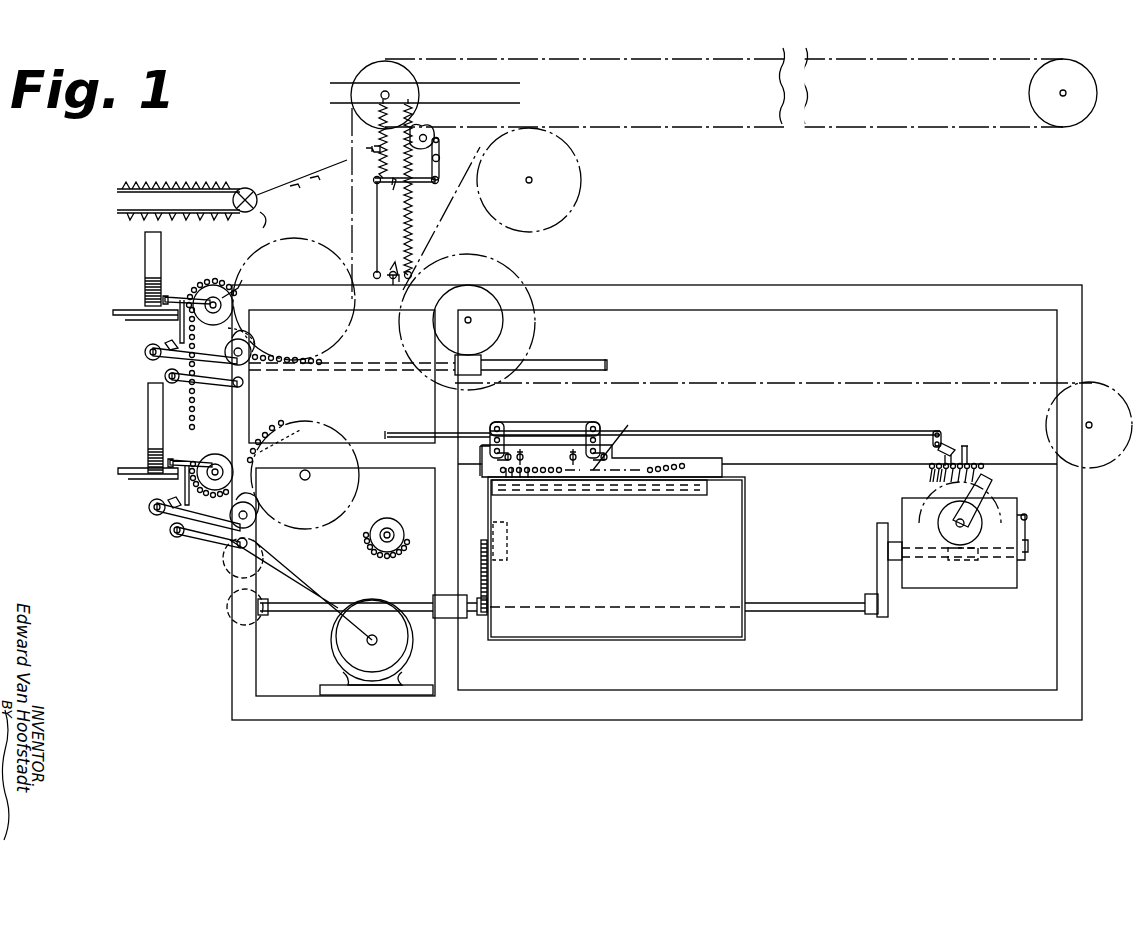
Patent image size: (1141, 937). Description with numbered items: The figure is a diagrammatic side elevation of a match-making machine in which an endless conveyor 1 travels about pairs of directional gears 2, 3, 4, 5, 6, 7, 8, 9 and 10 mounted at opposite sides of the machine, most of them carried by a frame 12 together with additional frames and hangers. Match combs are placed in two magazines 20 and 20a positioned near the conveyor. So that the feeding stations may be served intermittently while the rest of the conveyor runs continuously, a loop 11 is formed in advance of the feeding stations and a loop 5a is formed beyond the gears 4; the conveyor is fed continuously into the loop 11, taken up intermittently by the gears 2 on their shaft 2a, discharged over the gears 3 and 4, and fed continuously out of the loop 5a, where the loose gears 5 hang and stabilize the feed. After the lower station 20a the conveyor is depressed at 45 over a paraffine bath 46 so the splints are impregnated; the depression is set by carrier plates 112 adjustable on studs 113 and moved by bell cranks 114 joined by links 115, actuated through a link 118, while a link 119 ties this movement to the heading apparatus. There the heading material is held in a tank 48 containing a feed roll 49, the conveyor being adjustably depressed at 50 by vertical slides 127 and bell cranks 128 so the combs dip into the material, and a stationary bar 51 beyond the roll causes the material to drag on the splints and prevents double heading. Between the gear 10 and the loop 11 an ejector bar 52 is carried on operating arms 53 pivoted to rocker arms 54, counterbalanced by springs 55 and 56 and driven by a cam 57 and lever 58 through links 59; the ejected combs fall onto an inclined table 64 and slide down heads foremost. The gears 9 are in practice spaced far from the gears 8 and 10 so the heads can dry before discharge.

The endless conveyor 1 is at (688, 128).
The directional gears 2 is at (205, 318).
The shaft 2a is at (222, 298).
The directional gears 3 is at (218, 456).
The directional gears 4 is at (313, 527).
The loose gears 5 is at (400, 515).
The loop 5a is at (369, 548).
The directional gears 6 is at (1047, 420).
The directional gears 7 is at (510, 322).
The directional gears 8 is at (580, 205).
The directional gears 9 is at (1031, 88).
The directional gears 10 is at (418, 80).
The loop 11 is at (340, 342).
The frame 12 is at (828, 436).
The magazine 20 is at (163, 257).
The magazine 20a is at (150, 406).
The conveyor depression 45 is at (643, 425).
The paraffine bath 46 is at (624, 488).
The tank 48 is at (992, 577).
The feed roll 49 is at (932, 489).
The adjustable conveyor depression 50 is at (948, 462).
The stationary bar 51 is at (1002, 493).
The ejector bar 52 is at (364, 148).
The operating arms 53 is at (376, 204).
The rocker arms 54 is at (396, 262).
The spring 55 is at (414, 213).
The spring 56 is at (380, 118).
The cam 57 is at (430, 126).
The lever 58 is at (440, 162).
The links 59 is at (397, 195).
The inclined table 64 is at (300, 180).
The carrier plates 112 is at (614, 456).
The studs 113 is at (569, 458).
The bell cranks 114 is at (481, 451).
The links 115 is at (540, 420).
The link 118 is at (406, 427).
The link 119 is at (738, 428).
The vertical slide 127 is at (967, 448).
The bell crank 128 is at (932, 441).